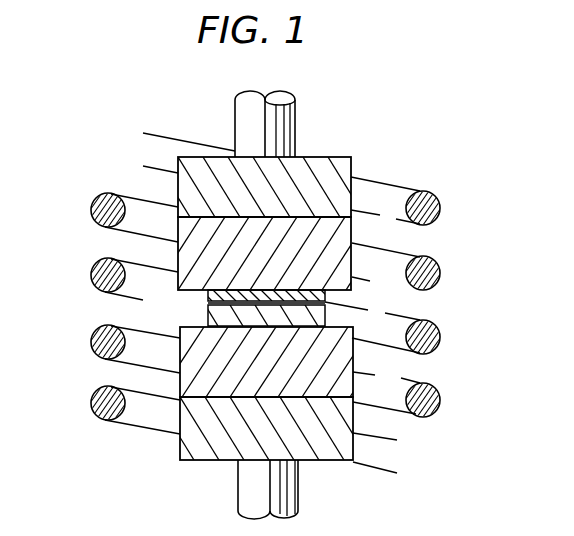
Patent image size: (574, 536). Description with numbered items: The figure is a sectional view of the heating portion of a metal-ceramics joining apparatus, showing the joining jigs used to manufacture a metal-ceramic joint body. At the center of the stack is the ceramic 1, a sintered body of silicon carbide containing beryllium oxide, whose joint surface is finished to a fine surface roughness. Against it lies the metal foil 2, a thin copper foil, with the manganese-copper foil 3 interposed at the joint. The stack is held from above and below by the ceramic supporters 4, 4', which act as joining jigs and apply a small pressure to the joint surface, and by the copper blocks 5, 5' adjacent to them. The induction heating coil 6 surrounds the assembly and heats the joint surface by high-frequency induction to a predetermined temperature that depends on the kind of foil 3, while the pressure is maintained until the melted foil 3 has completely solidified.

The ceramic 1 is at (327, 313).
The metal foil 2 is at (327, 293).
The manganese-copper foil 3 is at (207, 304).
The ceramic supporter 4 is at (267, 154).
The ceramic supporter 4' is at (262, 458).
The copper block 5 is at (285, 252).
The copper block 5' is at (289, 362).
The induction heating coil 6 is at (106, 193).